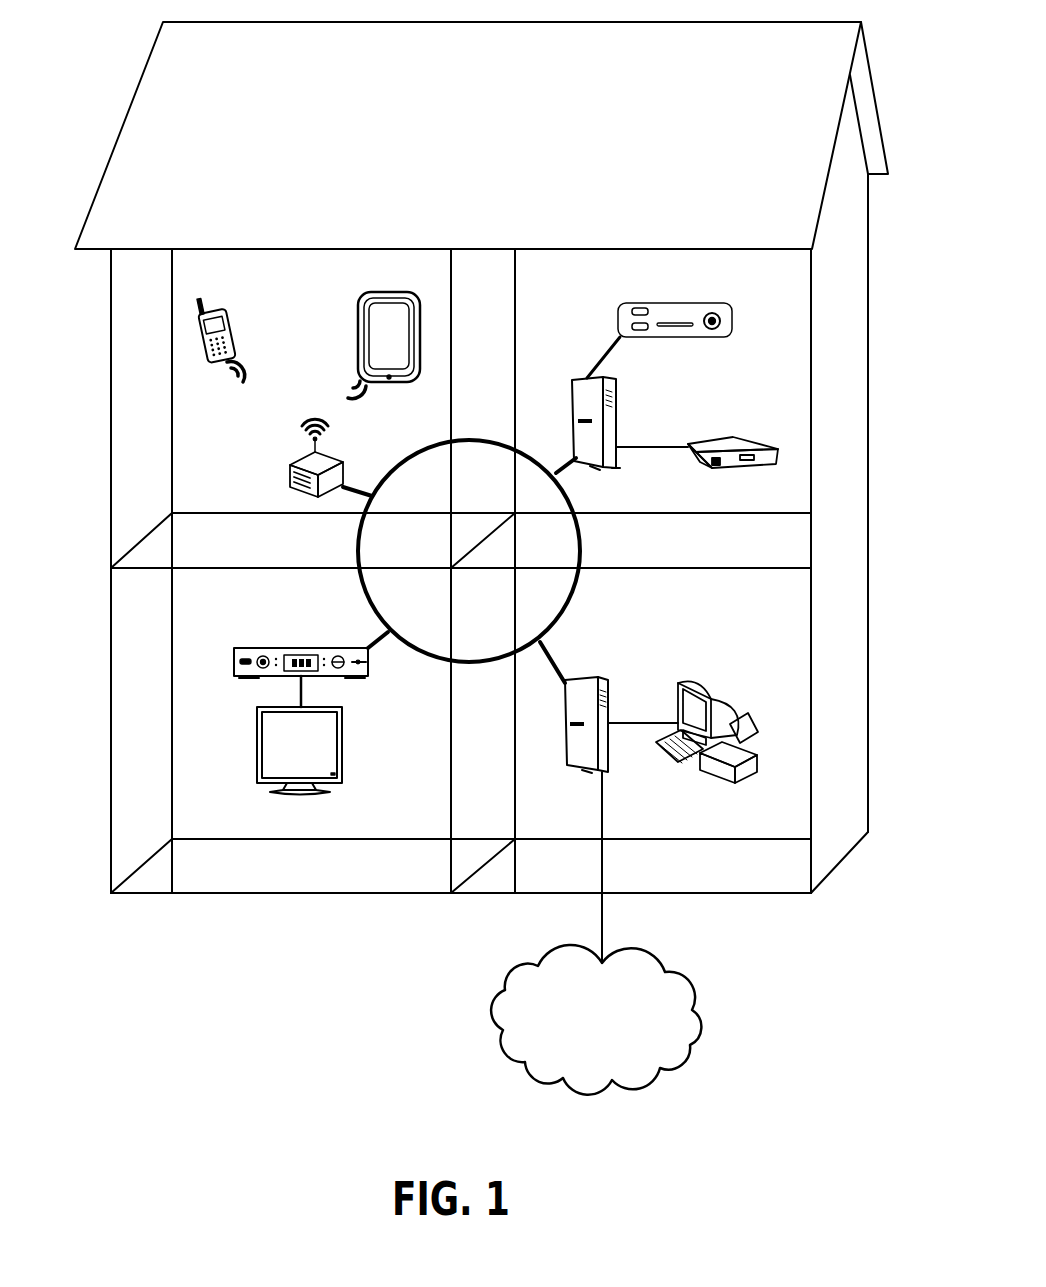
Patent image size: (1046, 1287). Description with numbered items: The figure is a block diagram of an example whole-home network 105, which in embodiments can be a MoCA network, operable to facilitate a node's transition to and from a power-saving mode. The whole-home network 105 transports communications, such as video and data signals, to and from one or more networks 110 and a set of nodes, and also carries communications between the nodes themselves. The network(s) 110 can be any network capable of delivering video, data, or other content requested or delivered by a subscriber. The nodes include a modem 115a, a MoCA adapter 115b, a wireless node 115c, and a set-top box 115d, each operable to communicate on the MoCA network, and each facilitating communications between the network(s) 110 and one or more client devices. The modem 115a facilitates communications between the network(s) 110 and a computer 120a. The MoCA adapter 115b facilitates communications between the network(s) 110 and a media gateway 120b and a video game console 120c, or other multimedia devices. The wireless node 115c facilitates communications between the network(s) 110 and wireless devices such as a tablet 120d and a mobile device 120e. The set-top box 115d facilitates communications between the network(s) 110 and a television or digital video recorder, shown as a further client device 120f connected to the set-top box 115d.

The whole-home network 105 is at (583, 545).
The network(s) 110 is at (525, 1073).
The modem 115a is at (585, 677).
The MoCA adapter 115b is at (618, 378).
The wireless node 115c is at (334, 463).
The set-top box 115d is at (256, 680).
The computer 120a is at (690, 680).
The media gateway 120b is at (718, 437).
The video game console 120c is at (680, 300).
The tablet 120d is at (368, 291).
The mobile device 120e is at (224, 310).
The client device 120f is at (295, 795).